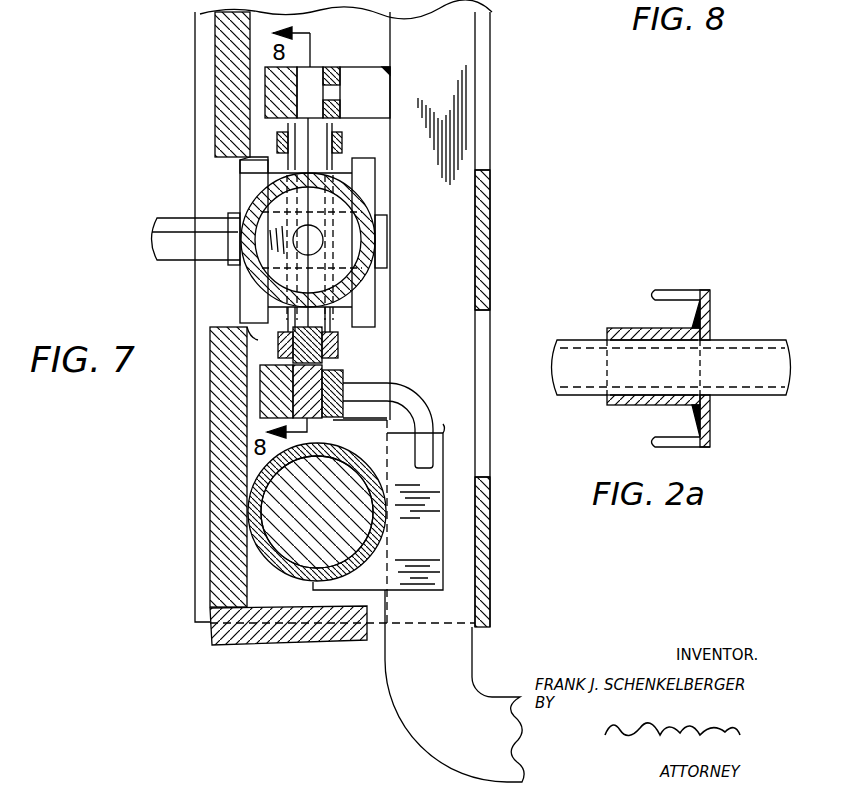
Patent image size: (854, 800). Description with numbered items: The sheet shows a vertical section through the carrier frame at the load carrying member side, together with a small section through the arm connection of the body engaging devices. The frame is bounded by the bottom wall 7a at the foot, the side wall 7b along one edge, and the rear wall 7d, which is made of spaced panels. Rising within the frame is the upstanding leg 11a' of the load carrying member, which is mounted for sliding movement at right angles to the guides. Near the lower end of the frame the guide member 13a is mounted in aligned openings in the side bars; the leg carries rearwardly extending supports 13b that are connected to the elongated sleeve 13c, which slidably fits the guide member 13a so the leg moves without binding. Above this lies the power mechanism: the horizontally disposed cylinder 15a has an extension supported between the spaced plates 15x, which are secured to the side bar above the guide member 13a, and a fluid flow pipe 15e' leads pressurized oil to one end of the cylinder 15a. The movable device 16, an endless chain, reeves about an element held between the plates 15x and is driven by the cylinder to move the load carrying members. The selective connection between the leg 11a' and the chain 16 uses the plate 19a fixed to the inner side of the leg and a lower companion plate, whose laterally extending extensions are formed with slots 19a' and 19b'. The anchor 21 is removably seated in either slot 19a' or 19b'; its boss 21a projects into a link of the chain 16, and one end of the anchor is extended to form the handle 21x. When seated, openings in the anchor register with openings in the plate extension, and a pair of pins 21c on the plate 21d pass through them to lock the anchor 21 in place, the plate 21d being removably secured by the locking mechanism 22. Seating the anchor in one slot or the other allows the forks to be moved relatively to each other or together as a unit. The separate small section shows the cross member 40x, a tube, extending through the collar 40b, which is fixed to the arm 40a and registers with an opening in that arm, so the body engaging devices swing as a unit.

In FIG. 7, the bottom wall 7a is at (275, 650).
In FIG. 7, the side wall 7b is at (200, 588).
In FIG. 7, the rear wall 7d is at (220, 97).
In FIG. 7, the upstanding leg 11a' is at (510, 398).
In FIG. 7, the guide member 13a is at (278, 565).
In FIG. 7, the rearwardly extending support 13b is at (372, 592).
In FIG. 7, the elongated sleeve 13c is at (385, 522).
In FIG. 7, the cylinder 15a is at (355, 212).
In FIG. 7, the fluid flow pipe 15e' is at (250, 255).
In FIG. 7, the spaced plates 15x is at (268, 166).
In FIG. 7, the movable device 16 is at (327, 129).
In FIG. 7, the plate 19a is at (386, 73).
In FIG. 7, the slot 19a' is at (310, 73).
In FIG. 7, the slot 19b' is at (258, 432).
In FIG. 7, the anchor 21 is at (322, 432).
In FIG. 7, the boss 21a is at (338, 345).
In FIG. 7, the pin 21c is at (262, 398).
In FIG. 7, the plate 21d is at (378, 386).
In FIG. 7, the handle 21x is at (378, 393).
In FIG. 7, the locking mechanism 22 is at (331, 370).
In FIG. 2A, the arm 40a is at (712, 318).
In FIG. 2A, the collar 40b is at (627, 328).
In FIG. 2A, the cross member 40x is at (582, 398).